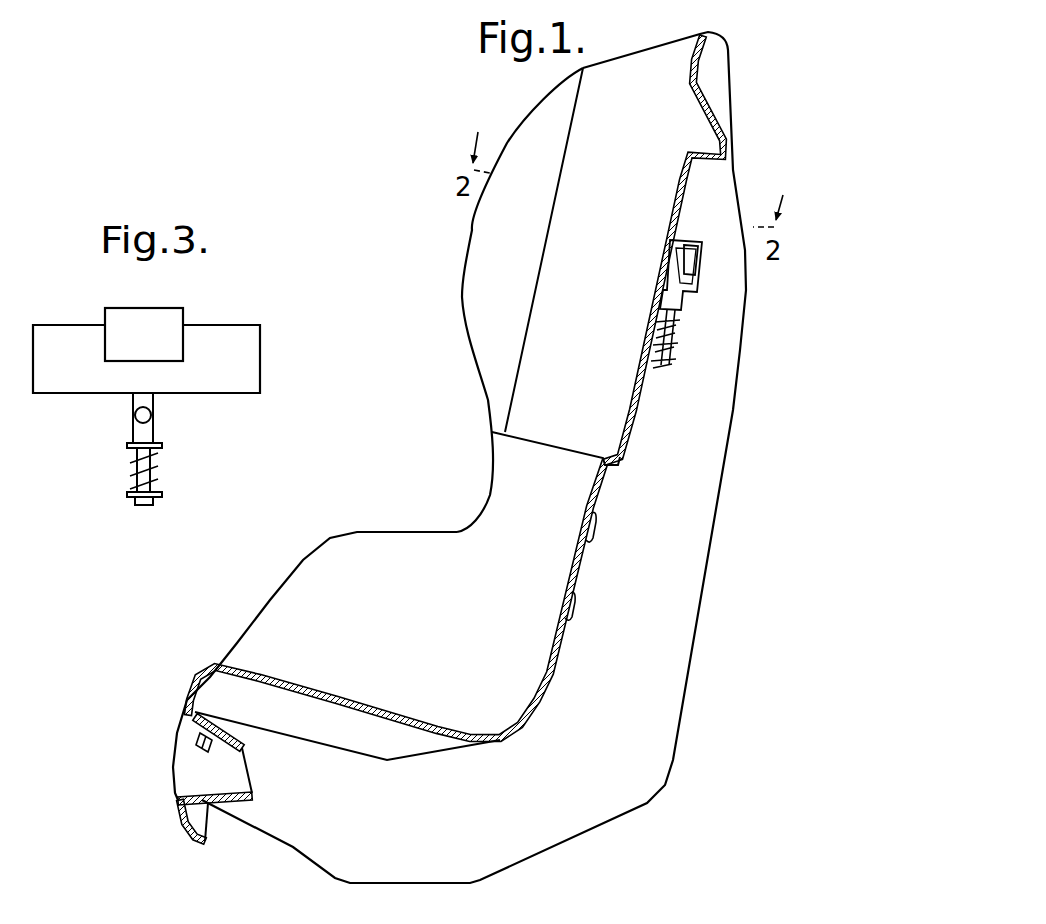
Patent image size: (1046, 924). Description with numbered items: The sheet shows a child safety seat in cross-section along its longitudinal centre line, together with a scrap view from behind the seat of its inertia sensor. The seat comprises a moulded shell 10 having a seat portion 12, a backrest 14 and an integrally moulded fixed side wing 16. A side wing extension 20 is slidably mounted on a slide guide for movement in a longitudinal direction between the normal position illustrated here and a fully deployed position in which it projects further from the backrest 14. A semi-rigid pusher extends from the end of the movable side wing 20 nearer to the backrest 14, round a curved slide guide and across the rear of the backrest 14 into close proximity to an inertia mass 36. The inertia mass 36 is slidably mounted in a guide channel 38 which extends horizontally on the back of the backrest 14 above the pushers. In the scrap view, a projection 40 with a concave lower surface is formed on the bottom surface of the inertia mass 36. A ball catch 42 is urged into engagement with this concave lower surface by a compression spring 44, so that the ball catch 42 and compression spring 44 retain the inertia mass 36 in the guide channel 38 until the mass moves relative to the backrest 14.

In FIG. 1, the moulded shell 10 is at (251, 606).
In FIG. 1, the seat portion 12 is at (252, 667).
In FIG. 1, the backrest 14 is at (578, 568).
In FIG. 1, the fixed side wing 16 is at (563, 423).
In FIG. 1, the side wing extension 20 is at (482, 300).
In FIG. 1, the inertia mass 36 is at (682, 302).
In FIG. 3, the inertia mass 36 is at (73, 367).
In FIG. 1, the guide channel 38 is at (697, 277).
In FIG. 3, the guide channel 38 is at (162, 326).
In FIG. 3, the projection 40 is at (157, 400).
In FIG. 3, the ball catch 42 is at (132, 417).
In FIG. 1, the compression spring 44 is at (673, 352).
In FIG. 3, the compression spring 44 is at (160, 478).